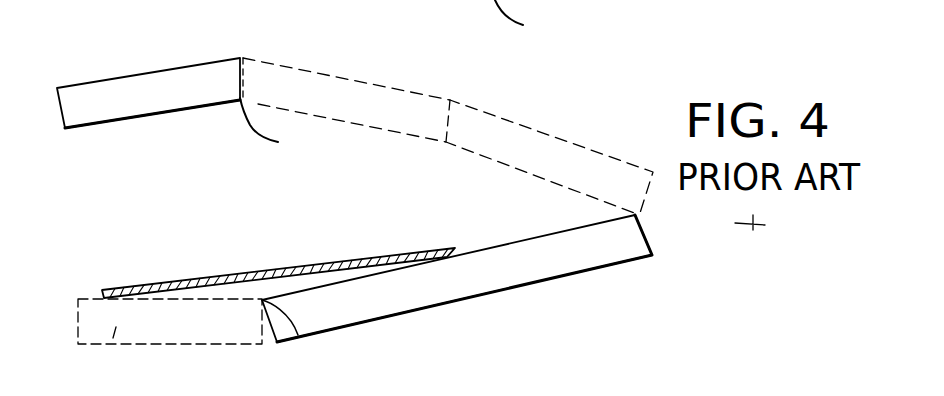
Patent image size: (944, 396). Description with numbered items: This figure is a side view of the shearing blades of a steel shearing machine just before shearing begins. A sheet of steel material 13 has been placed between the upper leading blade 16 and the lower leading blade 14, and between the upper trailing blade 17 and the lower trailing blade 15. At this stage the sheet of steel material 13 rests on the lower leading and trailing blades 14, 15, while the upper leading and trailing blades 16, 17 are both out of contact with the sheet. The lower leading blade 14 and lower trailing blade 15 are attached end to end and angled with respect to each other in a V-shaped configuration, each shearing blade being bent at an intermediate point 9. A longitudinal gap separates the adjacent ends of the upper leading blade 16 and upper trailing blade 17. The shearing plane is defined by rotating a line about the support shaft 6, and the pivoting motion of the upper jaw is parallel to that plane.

The support shaft 6 is at (756, 224).
The intermediate point 9 is at (327, 345).
The sheet of steel material 13 is at (182, 282).
The lower leading blade 14 is at (107, 345).
The lower trailing blade 15 is at (530, 270).
The upper leading blade 16 is at (143, 87).
The upper trailing blade 17 is at (300, 83).